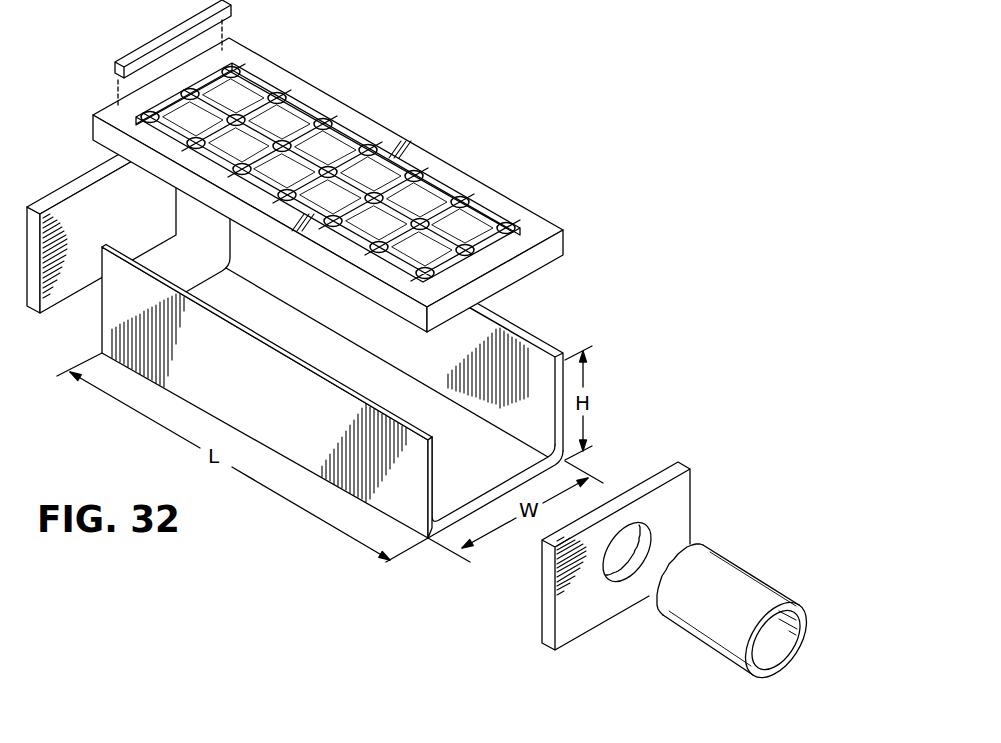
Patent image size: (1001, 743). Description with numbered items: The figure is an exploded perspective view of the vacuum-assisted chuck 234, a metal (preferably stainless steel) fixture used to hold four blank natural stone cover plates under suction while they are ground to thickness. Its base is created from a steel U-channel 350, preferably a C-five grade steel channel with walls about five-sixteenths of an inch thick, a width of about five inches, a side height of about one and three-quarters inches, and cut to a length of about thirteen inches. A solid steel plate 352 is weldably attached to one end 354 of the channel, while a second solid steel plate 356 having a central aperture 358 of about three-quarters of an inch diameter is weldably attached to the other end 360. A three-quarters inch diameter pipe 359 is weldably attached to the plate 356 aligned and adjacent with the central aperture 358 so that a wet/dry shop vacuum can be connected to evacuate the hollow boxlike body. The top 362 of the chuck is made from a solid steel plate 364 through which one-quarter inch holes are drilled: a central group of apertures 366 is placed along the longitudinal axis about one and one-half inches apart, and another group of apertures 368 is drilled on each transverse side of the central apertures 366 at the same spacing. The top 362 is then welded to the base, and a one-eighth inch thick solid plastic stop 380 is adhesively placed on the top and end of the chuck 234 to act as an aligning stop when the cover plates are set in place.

The vacuum-assisted chuck 234 is at (420, 347).
The steel U-channel 350 is at (337, 382).
The solid steel plate 352 is at (96, 175).
The one end of the C-channel 354 is at (101, 324).
The solid steel plate with central aperture 356 is at (609, 577).
The central aperture 358 is at (610, 540).
The pipe 359 is at (712, 661).
The other end of the C-channel 360 is at (440, 528).
The top 362 is at (341, 166).
The solid steel plate 364 is at (566, 230).
The central group of apertures 366 is at (190, 90).
The apertures 368 is at (232, 67).
The solid plastic stop 380 is at (117, 60).